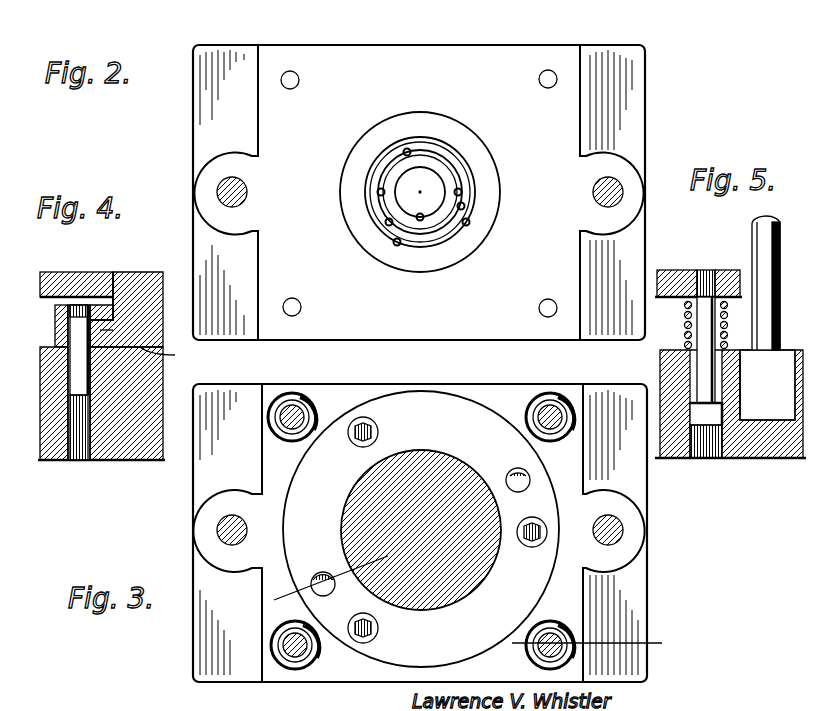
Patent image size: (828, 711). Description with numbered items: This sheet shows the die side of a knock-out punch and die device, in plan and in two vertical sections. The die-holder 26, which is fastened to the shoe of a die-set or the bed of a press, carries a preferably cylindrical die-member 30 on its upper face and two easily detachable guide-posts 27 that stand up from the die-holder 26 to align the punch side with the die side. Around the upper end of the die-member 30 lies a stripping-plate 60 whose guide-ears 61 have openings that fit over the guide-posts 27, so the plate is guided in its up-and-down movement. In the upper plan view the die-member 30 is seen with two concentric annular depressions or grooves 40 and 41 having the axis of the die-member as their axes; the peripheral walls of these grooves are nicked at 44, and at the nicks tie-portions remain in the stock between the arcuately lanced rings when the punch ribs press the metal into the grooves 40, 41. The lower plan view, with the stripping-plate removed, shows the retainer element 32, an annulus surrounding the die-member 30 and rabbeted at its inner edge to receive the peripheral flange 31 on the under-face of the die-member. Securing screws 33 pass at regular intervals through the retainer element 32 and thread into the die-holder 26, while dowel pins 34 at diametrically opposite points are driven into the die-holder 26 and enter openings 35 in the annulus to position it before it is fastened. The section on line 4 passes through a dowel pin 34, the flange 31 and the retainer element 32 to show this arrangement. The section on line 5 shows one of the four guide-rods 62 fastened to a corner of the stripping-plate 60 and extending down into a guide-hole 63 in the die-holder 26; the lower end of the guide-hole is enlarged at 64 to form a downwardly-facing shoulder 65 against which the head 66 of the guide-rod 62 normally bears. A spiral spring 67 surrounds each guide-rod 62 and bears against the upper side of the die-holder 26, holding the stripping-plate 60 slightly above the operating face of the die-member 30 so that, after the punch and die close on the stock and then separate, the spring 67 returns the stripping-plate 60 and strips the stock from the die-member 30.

In FIG. 2, the stripping-plate 60 is at (396, 66).
In FIG. 4, the stripping-plate 60 is at (60, 272).
In FIG. 5, the stripping-plate 60 is at (668, 277).
In FIG. 2, the guide-ears 61 is at (226, 222).
In FIG. 2, the die-holder 26 is at (628, 115).
In FIG. 3, the die-holder 26 is at (568, 579).
In FIG. 4, the die-holder 26 is at (128, 452).
In FIG. 5, the die-holder 26 is at (758, 452).
In FIG. 2, the guide-posts 27 is at (242, 190).
In FIG. 3, the guide-posts 27 is at (240, 520).
In FIG. 5, the guide-posts 27 is at (754, 228).
In FIG. 2, the die-member 30 is at (480, 236).
In FIG. 3, the die-member 30 is at (486, 562).
In FIG. 4, the die-member 30 is at (126, 285).
In FIG. 2, the annular depression or groove 41 is at (397, 150).
In FIG. 4, the annular depression or groove 41 is at (146, 274).
In FIG. 2, the annular depression or groove 40 is at (393, 210).
In FIG. 2, the nicks 44 is at (447, 146).
In FIG. 3, the retainer element 32 is at (417, 400).
In FIG. 4, the retainer element 32 is at (120, 318).
In FIG. 3, the guide-rods 62 is at (292, 410).
In FIG. 5, the guide-rods 62 is at (700, 368).
In FIG. 3, the spiral spring 67 is at (312, 407).
In FIG. 5, the spiral spring 67 is at (730, 322).
In FIG. 3, the securing screws 33 is at (355, 444).
In FIG. 3, the dowel pins 34 is at (516, 468).
In FIG. 4, the dowel pins 34 is at (70, 339).
In FIG. 3, the openings 35 is at (508, 474).
In FIG. 4, the openings 35 is at (82, 308).
In FIG. 4, the peripheral flange 31 is at (136, 352).
In FIG. 5, the guide-holes 63 is at (720, 376).
In FIG. 5, the downwardly-facing shoulders 65 is at (722, 398).
In FIG. 5, the enlargement of guide-hole 64 is at (712, 452).
In FIG. 5, the heads 66 is at (692, 450).
In FIG. 3, the section line 4— 4 is at (331, 578).
In FIG. 3, the section line 5— 5 is at (585, 648).